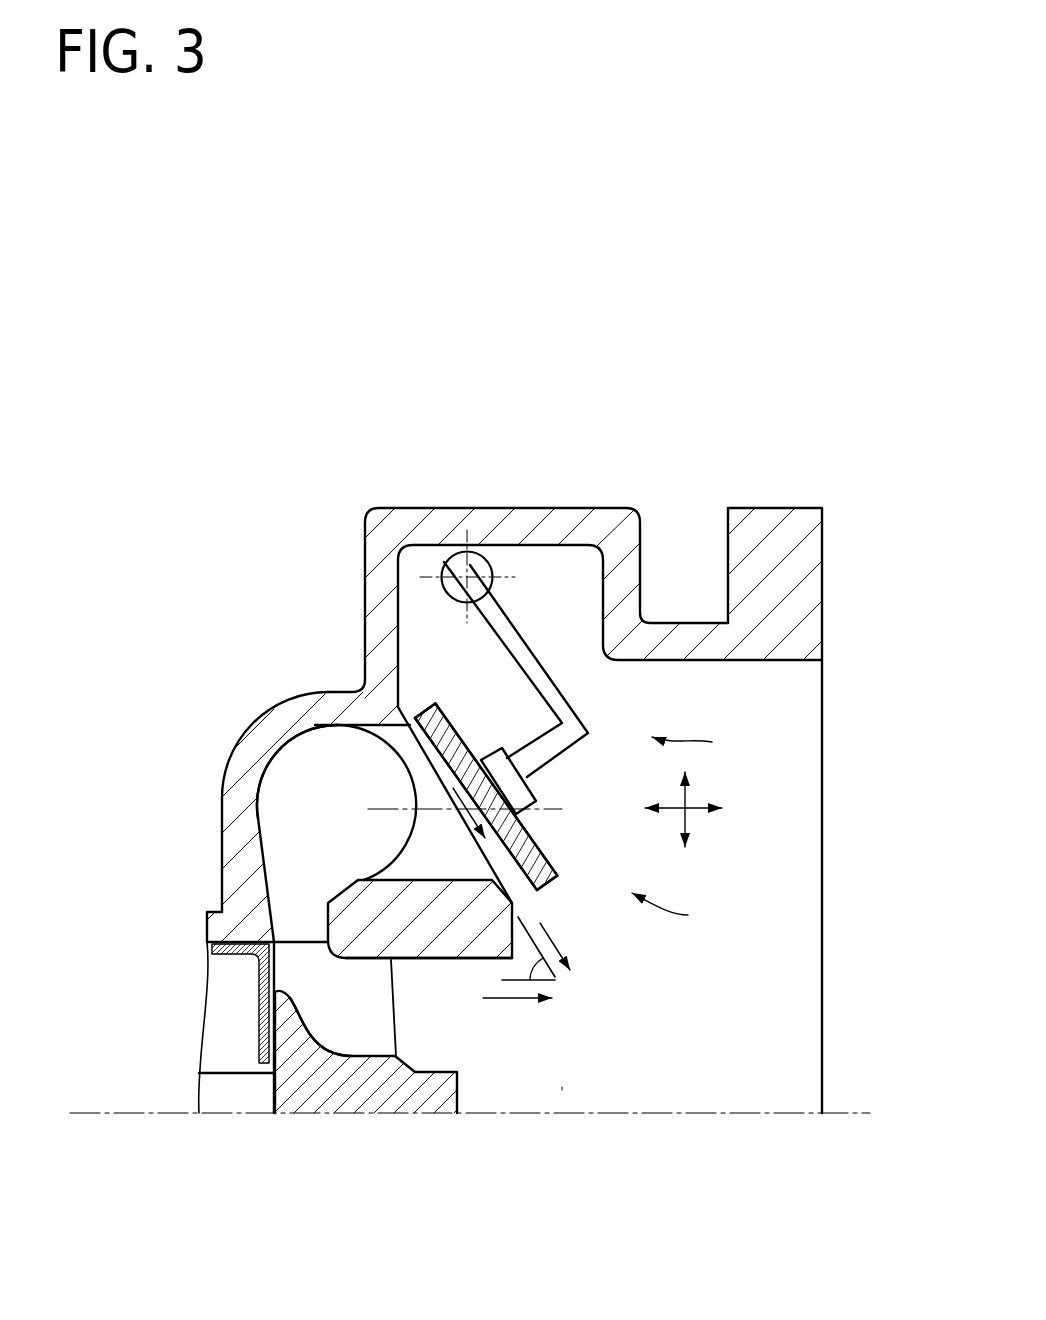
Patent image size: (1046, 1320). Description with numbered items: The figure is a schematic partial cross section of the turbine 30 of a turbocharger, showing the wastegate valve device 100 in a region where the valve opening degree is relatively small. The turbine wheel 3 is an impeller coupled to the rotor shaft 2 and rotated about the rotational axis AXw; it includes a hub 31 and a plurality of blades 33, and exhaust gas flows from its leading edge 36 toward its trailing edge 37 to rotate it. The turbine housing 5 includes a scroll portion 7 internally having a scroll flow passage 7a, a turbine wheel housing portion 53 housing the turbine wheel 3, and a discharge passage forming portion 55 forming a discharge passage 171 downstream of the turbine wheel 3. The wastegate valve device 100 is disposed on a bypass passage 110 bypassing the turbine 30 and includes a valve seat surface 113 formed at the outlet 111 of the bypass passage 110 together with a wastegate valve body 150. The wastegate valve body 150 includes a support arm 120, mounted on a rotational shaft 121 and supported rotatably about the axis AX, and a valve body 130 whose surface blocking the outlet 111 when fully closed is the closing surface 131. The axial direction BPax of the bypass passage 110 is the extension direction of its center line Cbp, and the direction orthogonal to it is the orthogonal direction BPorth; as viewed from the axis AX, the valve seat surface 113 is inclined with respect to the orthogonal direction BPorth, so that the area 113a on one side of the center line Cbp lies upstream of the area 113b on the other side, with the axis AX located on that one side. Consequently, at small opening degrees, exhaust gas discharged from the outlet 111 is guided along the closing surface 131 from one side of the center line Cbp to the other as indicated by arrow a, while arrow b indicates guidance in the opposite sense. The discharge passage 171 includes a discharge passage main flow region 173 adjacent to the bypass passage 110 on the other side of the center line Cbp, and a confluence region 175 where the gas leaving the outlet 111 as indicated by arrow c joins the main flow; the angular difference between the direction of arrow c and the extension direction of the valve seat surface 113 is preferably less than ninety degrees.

The turbine 30 is at (800, 470).
The bypass passage 110 is at (392, 722).
The rotational shaft 121 is at (452, 556).
The axis AX is at (465, 575).
The support arm 120 is at (515, 650).
The closing surface 131 is at (455, 777).
The valve body 130 is at (527, 837).
The outlet 111 is at (487, 847).
The valve seat surface 113 is at (488, 858).
The area of the valve seat surface on one side 113a is at (420, 722).
The area of the valve seat surface on another side 113b is at (515, 896).
The turbine housing 5 is at (282, 718).
The scroll portion 7 is at (310, 763).
The scroll flow passage 7a is at (297, 771).
The leading edge 36 is at (302, 934).
The center line of the bypass passage Cbp is at (372, 812).
The arrow a is at (450, 829).
The trailing edge 37 is at (383, 978).
The discharge passage main flow region 173 is at (458, 1040).
The discharge passage 171 is at (513, 1040).
The confluence region 175 is at (638, 1012).
The arrow b is at (567, 942).
The arrow c is at (540, 1005).
The rotor shaft 2 is at (245, 1105).
The blades 33 is at (295, 978).
The hub 31 is at (356, 1105).
The turbine wheel housing portion 53 is at (373, 1032).
The turbine wheel 3 is at (436, 1062).
The discharge passage forming portion 55 is at (562, 1087).
The rotational axis AXw is at (692, 1128).
The wastegate valve device 100 is at (705, 745).
The wastegate valve body 150 is at (685, 911).
The orthogonal direction BPorth is at (688, 796).
The axial direction BPax is at (697, 812).